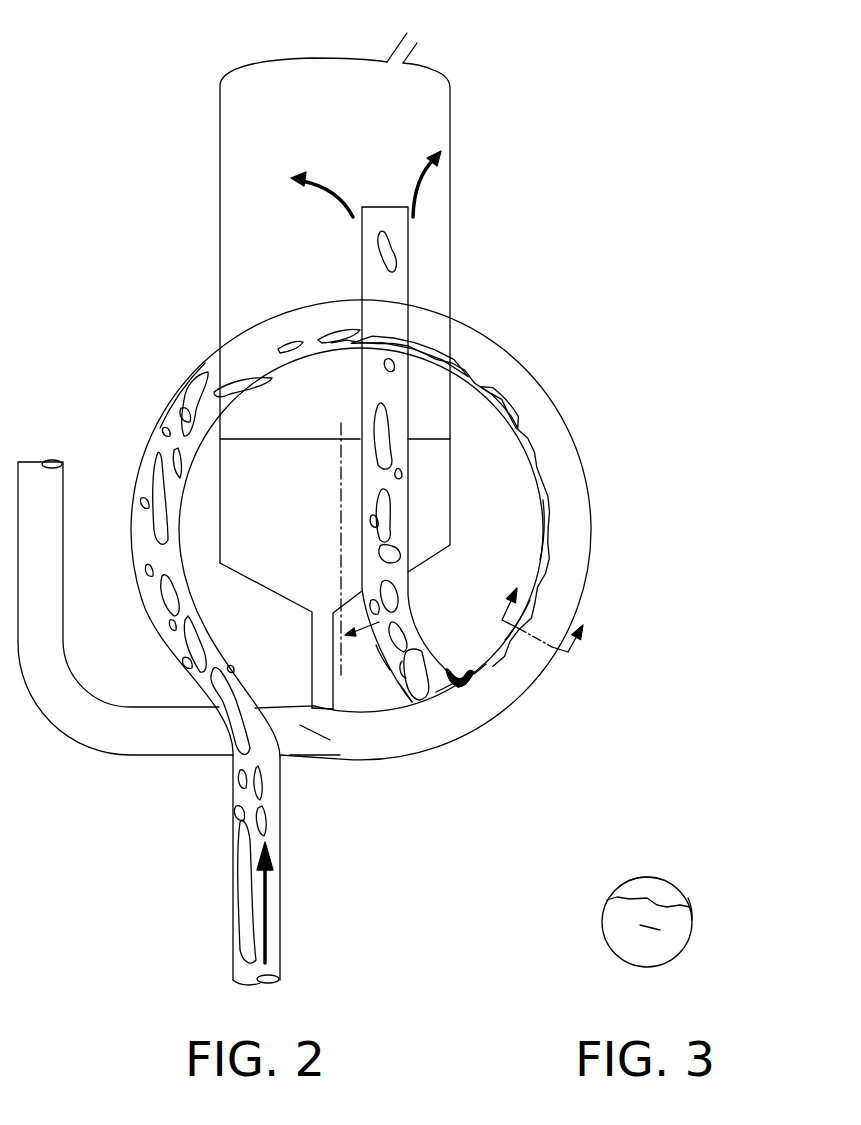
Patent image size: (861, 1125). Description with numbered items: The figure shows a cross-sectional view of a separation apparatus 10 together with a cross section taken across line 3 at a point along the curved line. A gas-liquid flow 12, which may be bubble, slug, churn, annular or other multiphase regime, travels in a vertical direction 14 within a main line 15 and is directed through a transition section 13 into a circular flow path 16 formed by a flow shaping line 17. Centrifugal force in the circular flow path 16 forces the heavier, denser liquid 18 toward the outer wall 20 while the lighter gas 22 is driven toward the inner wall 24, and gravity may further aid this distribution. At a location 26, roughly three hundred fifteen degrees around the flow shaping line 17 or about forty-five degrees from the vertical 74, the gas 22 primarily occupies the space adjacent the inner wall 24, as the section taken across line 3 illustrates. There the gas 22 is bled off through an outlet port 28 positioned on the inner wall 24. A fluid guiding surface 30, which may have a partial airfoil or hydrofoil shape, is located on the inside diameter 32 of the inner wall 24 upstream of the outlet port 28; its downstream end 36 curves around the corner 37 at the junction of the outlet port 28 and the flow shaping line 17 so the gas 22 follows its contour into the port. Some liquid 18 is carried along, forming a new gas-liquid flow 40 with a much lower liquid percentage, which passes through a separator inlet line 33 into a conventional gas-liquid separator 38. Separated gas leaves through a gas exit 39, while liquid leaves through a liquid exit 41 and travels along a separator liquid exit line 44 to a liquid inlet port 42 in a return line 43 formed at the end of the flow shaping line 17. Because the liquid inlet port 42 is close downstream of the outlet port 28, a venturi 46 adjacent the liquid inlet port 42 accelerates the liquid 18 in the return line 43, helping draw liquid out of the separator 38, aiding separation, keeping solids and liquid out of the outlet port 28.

In FIG. 2, the separation apparatus 10 is at (88, 260).
In FIG. 2, the gas-liquid flow 12 is at (278, 952).
In FIG. 2, the transition section 13 is at (323, 708).
In FIG. 2, the vertical direction 14 is at (272, 855).
In FIG. 2, the main line 15 is at (278, 832).
In FIG. 2, the circular flow path 16 is at (182, 387).
In FIG. 2, the flow shaping line 17 is at (430, 310).
In FIG. 3, the flow shaping line 17 is at (692, 910).
In FIG. 2, the liquid 18 is at (460, 340).
In FIG. 3, the liquid 18 is at (658, 928).
In FIG. 2, the outer wall 20 is at (562, 415).
In FIG. 3, the outer wall 20 is at (667, 963).
In FIG. 2, the gas 22 is at (500, 388).
In FIG. 3, the gas 22 is at (655, 893).
In FIG. 2, the inner wall 24 is at (543, 510).
In FIG. 3, the inner wall 24 is at (645, 877).
In FIG. 2, the location 26 is at (523, 612).
In FIG. 2, the outlet port 28 is at (438, 703).
In FIG. 2, the fluid guiding surface 30 is at (472, 683).
In FIG. 2, the inside diameter 32 is at (473, 672).
In FIG. 2, the separator inlet line 33 is at (383, 663).
In FIG. 2, the downstream end 36 is at (448, 687).
In FIG. 2, the corner 37 is at (473, 687).
In FIG. 2, the gas-liquid separator 38 is at (450, 175).
In FIG. 2, the gas exit 39 is at (417, 43).
In FIG. 2, the new gas-liquid flow 40 is at (417, 667).
In FIG. 2, the liquid exit 41 is at (323, 617).
In FIG. 2, the liquid inlet port 42 is at (280, 753).
In FIG. 2, the return line 43 is at (340, 755).
In FIG. 2, the separator liquid exit line 44 is at (312, 662).
In FIG. 2, the venturi 46 is at (323, 745).
In FIG. 2, the vertical 74 is at (377, 623).
In FIG. 2, the line 3- 3 is at (551, 607).